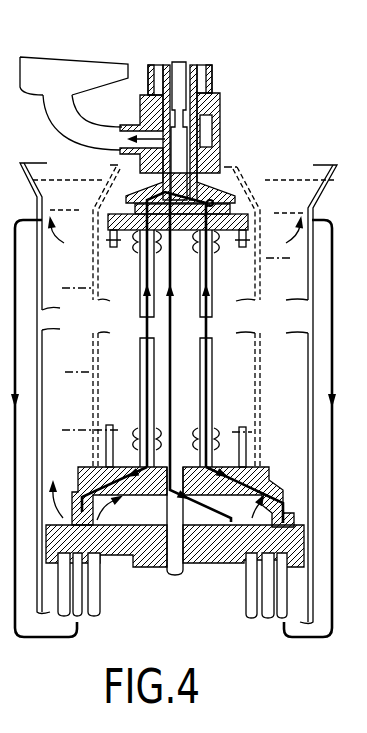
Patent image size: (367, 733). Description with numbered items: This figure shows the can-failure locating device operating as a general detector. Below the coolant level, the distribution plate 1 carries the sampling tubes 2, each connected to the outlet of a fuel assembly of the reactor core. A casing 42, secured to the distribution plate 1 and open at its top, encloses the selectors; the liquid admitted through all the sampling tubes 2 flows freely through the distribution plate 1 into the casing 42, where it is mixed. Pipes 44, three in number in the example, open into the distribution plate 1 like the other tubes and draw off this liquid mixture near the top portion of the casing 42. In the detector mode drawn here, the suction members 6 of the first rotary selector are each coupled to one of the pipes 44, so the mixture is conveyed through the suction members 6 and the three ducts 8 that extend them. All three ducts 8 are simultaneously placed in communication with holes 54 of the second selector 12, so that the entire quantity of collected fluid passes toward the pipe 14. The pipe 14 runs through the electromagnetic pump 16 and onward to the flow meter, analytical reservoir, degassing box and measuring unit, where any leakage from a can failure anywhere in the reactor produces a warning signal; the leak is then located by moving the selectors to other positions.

The distribution plate 1 is at (164, 565).
The sampling tubes 2 is at (252, 590).
The suction members 6 is at (273, 482).
The ducts 8 is at (96, 331).
The second selector 12 is at (232, 200).
The pipe 14 is at (78, 137).
The electromagnetic pump 16 is at (66, 86).
The casing 42 is at (311, 397).
The pipes 44 is at (332, 365).
The holes 54 is at (211, 203).